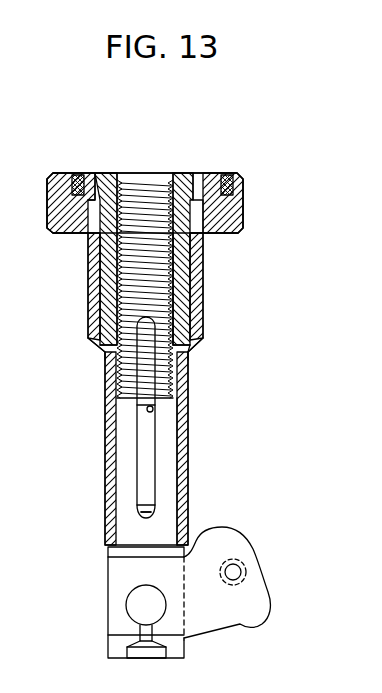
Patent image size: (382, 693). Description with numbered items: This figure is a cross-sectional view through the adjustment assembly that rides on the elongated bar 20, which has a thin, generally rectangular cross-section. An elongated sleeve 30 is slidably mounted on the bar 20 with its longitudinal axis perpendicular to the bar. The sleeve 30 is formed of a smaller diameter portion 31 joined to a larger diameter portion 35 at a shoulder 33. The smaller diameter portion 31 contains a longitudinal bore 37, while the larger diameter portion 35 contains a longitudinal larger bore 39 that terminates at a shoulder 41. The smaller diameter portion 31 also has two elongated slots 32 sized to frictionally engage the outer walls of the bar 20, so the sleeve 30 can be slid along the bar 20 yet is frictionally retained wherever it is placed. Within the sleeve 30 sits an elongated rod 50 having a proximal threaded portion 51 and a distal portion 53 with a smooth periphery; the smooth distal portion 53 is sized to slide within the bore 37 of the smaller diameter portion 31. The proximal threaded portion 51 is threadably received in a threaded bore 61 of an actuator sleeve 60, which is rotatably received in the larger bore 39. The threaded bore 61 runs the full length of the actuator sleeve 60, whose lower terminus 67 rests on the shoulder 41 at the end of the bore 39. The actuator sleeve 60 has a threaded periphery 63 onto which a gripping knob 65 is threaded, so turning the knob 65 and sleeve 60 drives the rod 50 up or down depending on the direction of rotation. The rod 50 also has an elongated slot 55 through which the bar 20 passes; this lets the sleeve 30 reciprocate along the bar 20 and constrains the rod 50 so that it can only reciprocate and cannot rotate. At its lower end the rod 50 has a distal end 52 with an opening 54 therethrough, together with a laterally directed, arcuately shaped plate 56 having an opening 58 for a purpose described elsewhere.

The elongated bar 20 is at (145, 478).
The elongated sleeve 30 is at (204, 382).
The smaller diameter portion 31 is at (187, 460).
The elongated slots 32 is at (152, 410).
The shoulder 33 is at (189, 349).
The larger diameter portion 35 is at (203, 266).
The longitudinal bore 37 is at (173, 487).
The longitudinal larger bore 39 is at (188, 288).
The shoulder 41 is at (190, 356).
The elongated rod 50 is at (133, 517).
The proximal threaded portion 51 is at (130, 285).
The distal end 52 is at (117, 583).
The distal portion 53 is at (123, 443).
The opening 54 is at (140, 610).
The elongated slot 55 is at (212, 424).
The arcuately shaped plate 56 is at (230, 610).
The opening 58 is at (243, 572).
The actuator sleeve 60 is at (102, 177).
The threaded bore 61 is at (147, 198).
The threaded periphery 63 is at (243, 195).
The gripping knob 65 is at (238, 195).
The lower terminus 67 is at (102, 342).